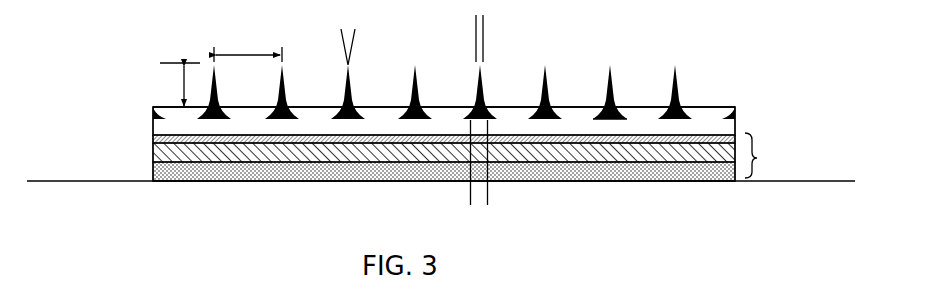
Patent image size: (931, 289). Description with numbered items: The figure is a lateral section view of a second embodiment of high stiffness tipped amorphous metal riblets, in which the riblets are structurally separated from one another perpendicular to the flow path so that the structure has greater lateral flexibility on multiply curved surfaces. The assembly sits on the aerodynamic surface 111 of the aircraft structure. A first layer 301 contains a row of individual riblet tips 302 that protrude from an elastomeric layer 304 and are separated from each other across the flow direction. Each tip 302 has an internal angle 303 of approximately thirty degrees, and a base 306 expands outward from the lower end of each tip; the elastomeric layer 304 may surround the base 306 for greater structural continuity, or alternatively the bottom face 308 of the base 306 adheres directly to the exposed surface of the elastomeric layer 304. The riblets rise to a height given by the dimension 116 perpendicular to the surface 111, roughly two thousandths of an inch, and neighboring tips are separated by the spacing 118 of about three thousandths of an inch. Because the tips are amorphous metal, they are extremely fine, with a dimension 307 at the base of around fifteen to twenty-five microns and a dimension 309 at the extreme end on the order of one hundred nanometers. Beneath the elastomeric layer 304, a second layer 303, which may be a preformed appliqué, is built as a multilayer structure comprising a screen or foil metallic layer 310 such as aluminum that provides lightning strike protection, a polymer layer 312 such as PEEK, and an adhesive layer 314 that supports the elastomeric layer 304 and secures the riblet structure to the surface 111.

The surface 111 is at (55, 181).
The dimension perpendicular to the surface 116 is at (178, 80).
The spacing between the riblets 118 is at (238, 52).
The first layer 301 is at (738, 122).
The riblet tips 302 is at (483, 80).
The internal angle / second layer 303 is at (760, 158).
The elastomeric layer 304 is at (448, 118).
The base 306 is at (553, 109).
The dimension at the base 307 is at (505, 192).
The bottom face 308 is at (608, 120).
The dimension at the extreme end of the tips 309 is at (452, 25).
The screen and/or foil metallic layer 310 is at (153, 136).
The polymer layer 312 is at (153, 155).
The adhesive layer 314 is at (153, 170).